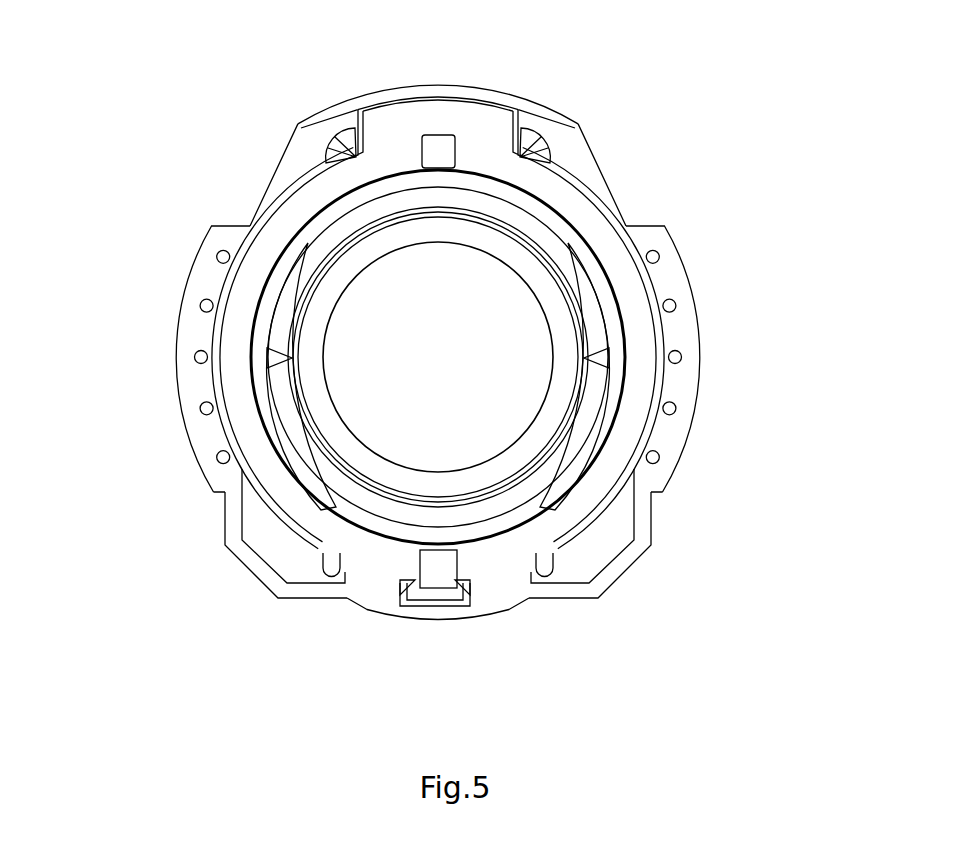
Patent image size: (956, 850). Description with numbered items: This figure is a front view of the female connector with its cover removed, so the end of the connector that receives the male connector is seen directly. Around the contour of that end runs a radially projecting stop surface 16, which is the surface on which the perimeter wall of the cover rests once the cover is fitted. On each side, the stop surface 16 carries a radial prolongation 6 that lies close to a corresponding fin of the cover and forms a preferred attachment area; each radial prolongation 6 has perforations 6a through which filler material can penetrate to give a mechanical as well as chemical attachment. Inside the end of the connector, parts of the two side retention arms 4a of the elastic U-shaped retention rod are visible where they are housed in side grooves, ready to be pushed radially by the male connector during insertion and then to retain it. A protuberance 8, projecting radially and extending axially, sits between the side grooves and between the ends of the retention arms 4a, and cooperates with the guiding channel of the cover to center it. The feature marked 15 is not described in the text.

The side retention arms 4a is at (310, 243).
The radial prolongation 6 is at (189, 384).
The perforations 6a is at (201, 306).
The protuberance 8 is at (435, 592).
The bracket 15 is at (277, 552).
The stop surface 16 is at (567, 130).